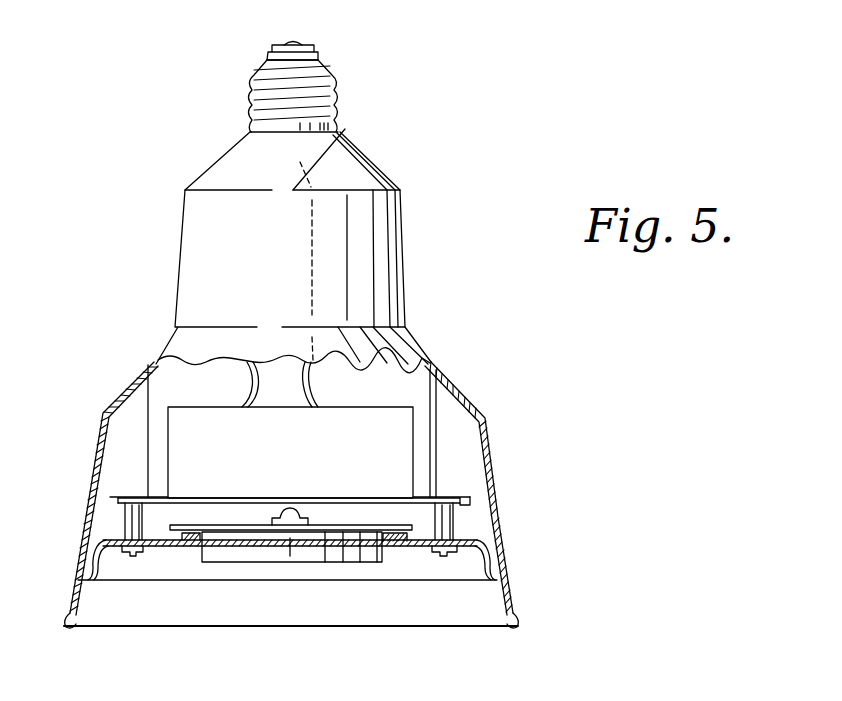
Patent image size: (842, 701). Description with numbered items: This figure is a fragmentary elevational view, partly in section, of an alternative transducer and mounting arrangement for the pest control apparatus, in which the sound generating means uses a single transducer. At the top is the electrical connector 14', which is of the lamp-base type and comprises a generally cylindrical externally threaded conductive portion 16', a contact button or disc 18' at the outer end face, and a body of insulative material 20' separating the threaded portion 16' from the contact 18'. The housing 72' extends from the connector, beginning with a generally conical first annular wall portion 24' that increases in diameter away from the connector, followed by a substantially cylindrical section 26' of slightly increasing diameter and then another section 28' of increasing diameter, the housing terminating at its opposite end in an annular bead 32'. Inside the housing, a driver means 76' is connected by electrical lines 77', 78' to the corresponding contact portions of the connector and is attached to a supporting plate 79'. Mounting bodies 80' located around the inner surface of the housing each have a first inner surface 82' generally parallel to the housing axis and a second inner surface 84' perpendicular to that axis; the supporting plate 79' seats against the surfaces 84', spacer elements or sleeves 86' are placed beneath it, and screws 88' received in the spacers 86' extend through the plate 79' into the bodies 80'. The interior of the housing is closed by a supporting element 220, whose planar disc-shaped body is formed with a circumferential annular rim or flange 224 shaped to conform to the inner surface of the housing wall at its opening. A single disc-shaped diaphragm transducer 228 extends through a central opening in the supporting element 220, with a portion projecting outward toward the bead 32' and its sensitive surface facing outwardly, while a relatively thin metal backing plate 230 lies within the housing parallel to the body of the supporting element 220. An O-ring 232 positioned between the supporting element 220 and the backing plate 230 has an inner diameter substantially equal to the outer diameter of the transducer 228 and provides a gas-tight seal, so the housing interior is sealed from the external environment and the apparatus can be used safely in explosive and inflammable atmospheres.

The electrical connector element 14' is at (340, 81).
The conductive portion 16' is at (256, 96).
The conductive element 18' is at (248, 31).
The body of insulative material 20' is at (336, 44).
The first annular wall portion 24' is at (314, 159).
The housing section 26' is at (388, 258).
The housing section 28' is at (292, 481).
The annular bead 32' is at (336, 612).
The lamp body 72' is at (260, 276).
The driver means 76' is at (363, 453).
The electrical line 77' is at (219, 384).
The electrical line 78' is at (343, 384).
The supporting plate 79' is at (345, 520).
The mounting bodies 80' is at (322, 434).
The first inner surface 82' is at (360, 431).
The second inner surface 84' is at (323, 494).
The spacer elements 86' is at (313, 534).
The screws 88' is at (290, 609).
The supporting element 220 is at (168, 551).
The annular rim 224 is at (105, 565).
The transducer means 228 is at (272, 556).
The backing plate 230 is at (355, 526).
The O-ring 232 is at (410, 552).